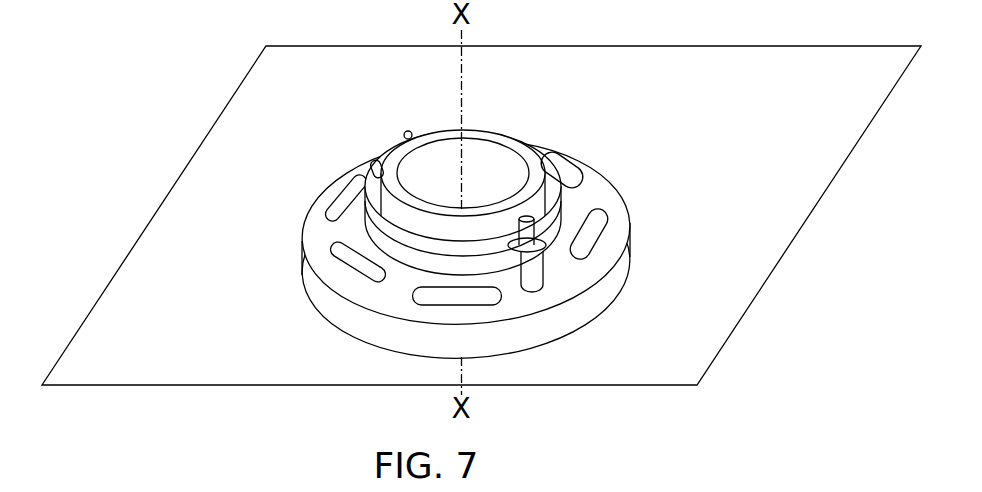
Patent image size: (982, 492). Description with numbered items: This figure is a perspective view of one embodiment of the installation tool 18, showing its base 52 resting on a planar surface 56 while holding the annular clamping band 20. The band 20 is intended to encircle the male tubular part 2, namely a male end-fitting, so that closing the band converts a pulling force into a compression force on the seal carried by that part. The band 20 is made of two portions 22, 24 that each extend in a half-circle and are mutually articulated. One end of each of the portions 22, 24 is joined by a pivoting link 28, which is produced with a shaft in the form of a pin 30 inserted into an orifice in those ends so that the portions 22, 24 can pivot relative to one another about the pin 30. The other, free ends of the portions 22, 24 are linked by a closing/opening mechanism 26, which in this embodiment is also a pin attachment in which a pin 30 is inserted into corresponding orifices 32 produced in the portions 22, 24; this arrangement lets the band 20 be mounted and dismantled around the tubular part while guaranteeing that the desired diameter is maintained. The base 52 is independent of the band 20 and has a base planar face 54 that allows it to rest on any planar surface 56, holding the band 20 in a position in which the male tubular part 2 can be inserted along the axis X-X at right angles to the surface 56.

The male tubular part 2 is at (463, 234).
The installation tool 18 is at (421, 278).
The annular clamping band 20 is at (555, 198).
The band portion 22 is at (333, 243).
The band portion 24 is at (562, 180).
The closing/opening mechanism 26 is at (552, 216).
The pivoting link 28 is at (403, 123).
The pin 30 is at (403, 135).
The orifices 32 is at (540, 227).
The base 52 is at (352, 317).
The base planar face 54 is at (537, 343).
The planar surface 56 is at (747, 265).